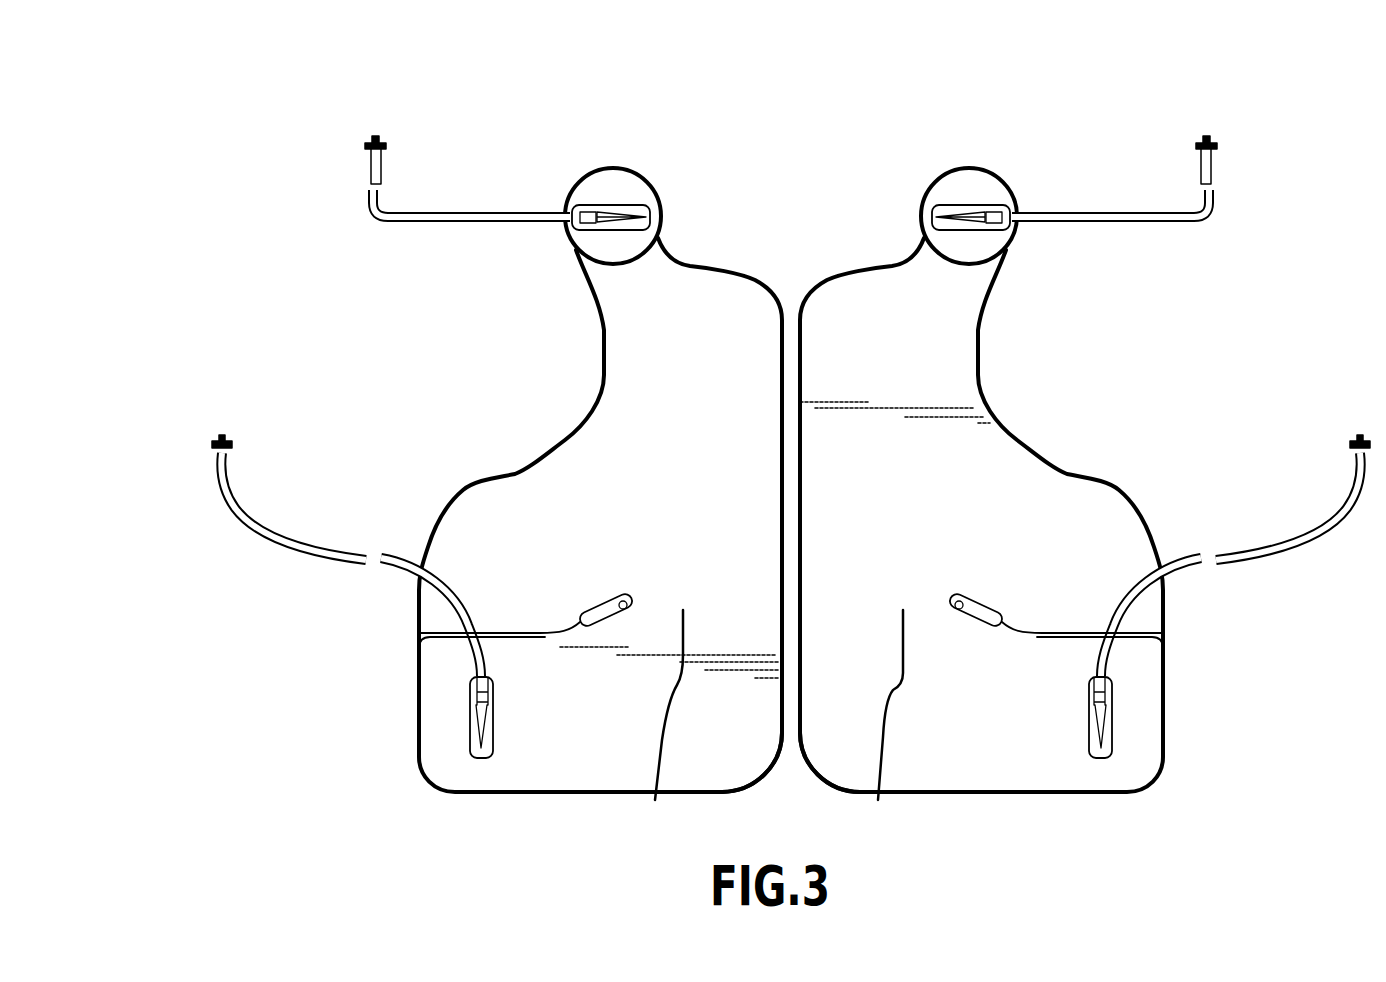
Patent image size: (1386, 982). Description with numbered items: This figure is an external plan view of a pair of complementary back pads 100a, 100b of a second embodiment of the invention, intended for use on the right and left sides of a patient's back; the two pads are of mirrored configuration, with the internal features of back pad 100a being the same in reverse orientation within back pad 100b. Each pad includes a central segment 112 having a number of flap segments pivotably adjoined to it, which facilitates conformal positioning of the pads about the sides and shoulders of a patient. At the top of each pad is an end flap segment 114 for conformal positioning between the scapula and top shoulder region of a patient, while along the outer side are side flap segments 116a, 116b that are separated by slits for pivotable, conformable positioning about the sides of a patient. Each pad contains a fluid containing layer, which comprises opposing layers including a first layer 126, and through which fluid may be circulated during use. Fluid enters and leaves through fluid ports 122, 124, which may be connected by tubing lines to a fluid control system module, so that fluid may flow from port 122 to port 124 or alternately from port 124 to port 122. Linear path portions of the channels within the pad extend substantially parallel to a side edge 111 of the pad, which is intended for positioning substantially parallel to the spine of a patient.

The back pad 100a is at (1078, 132).
The back pad 100b is at (505, 389).
The side edge 111 is at (778, 715).
The central segment 112 is at (772, 725).
The end flap segment 114 is at (667, 262).
The side flap segment 116a is at (468, 520).
The side flap segment 116b is at (428, 670).
The fluid port 122 is at (607, 240).
The fluid port 124 is at (470, 728).
The first layer 126 is at (685, 520).